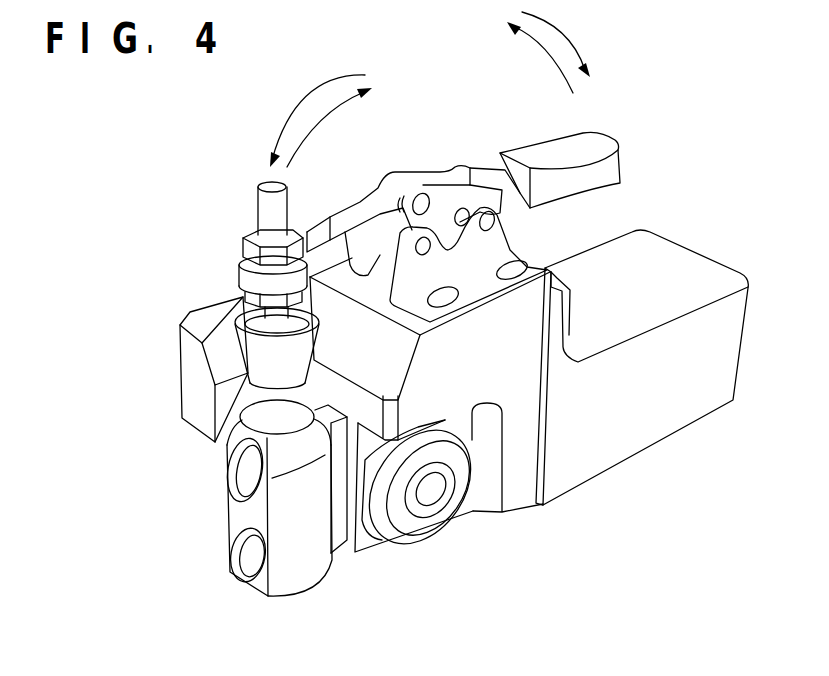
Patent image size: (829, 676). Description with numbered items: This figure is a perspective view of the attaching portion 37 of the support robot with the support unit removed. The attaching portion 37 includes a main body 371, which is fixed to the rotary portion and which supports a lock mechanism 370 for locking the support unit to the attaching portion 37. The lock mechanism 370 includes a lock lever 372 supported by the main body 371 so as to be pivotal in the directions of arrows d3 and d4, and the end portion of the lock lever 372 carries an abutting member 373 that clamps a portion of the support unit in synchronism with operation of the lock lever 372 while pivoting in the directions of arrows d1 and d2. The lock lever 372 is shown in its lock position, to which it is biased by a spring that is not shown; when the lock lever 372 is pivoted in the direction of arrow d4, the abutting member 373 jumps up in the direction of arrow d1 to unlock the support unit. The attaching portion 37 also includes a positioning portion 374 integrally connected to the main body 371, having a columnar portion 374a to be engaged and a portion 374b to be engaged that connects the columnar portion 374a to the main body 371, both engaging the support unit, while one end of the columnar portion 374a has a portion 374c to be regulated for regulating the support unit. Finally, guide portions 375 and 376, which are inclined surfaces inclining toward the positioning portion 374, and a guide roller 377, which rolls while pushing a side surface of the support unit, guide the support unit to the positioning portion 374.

The attaching portion 37 is at (680, 192).
The lock mechanism 370 is at (618, 120).
The main body 371 is at (533, 502).
The lock lever 372 is at (518, 148).
The abutting member 373 is at (258, 373).
The positioning portion 374 is at (320, 615).
The columnar portion to be engaged 374a is at (283, 602).
The portion to be engaged 374b is at (337, 553).
The portion to be regulated 374c is at (288, 413).
The guide portion 375 is at (217, 348).
The guide portion 376 is at (395, 368).
The guide roller 377 is at (442, 528).
The arrow direction d1 is at (337, 105).
The arrow direction d2 is at (310, 95).
The arrow direction d3 is at (578, 45).
The arrow direction d4 is at (543, 42).